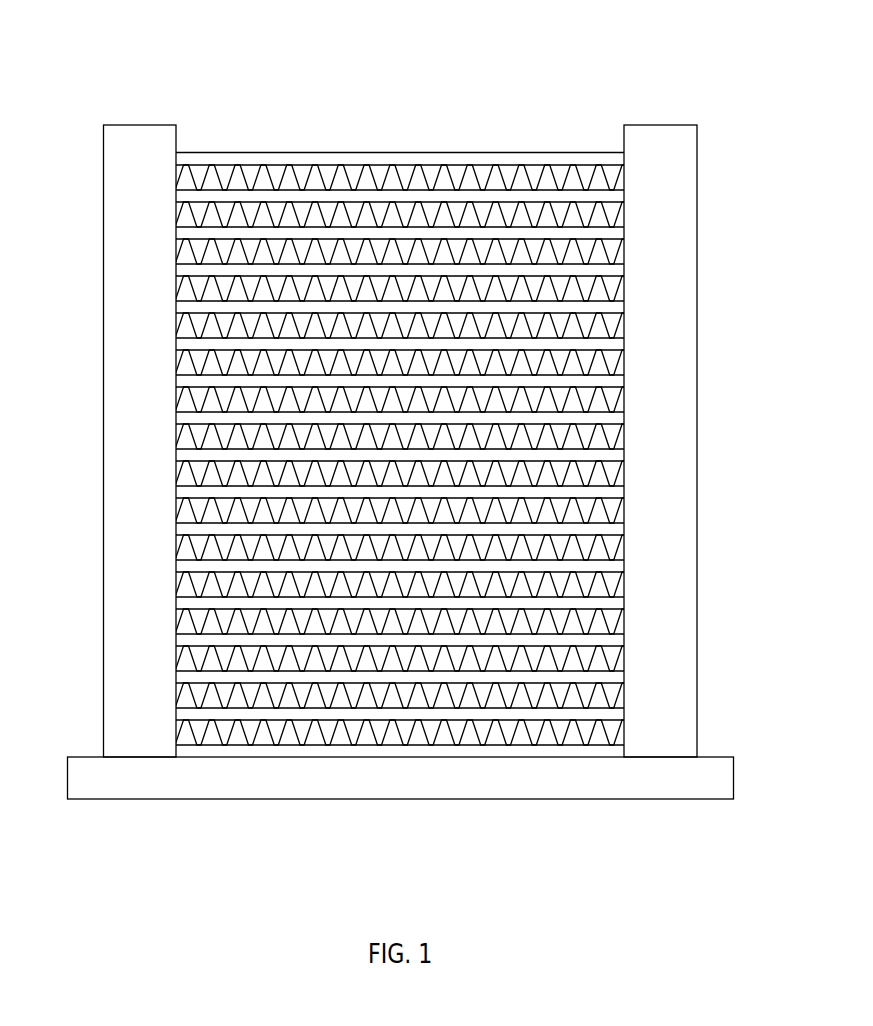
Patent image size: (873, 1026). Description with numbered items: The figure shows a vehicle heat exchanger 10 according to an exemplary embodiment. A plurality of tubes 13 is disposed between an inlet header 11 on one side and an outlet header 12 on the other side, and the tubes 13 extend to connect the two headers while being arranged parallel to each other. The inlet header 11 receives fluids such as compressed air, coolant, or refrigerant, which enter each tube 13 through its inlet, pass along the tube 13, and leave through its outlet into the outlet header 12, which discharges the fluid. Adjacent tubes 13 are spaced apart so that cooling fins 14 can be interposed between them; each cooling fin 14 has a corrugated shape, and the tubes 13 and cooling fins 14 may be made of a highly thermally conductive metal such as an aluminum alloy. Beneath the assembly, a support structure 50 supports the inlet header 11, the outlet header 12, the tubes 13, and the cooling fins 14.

The heat exchanger 10 is at (65, 76).
The inlet header 11 is at (115, 499).
The outlet header 12 is at (685, 553).
The tube 13 is at (438, 154).
The cooling fin 14 is at (331, 172).
The support structure 50 is at (720, 778).